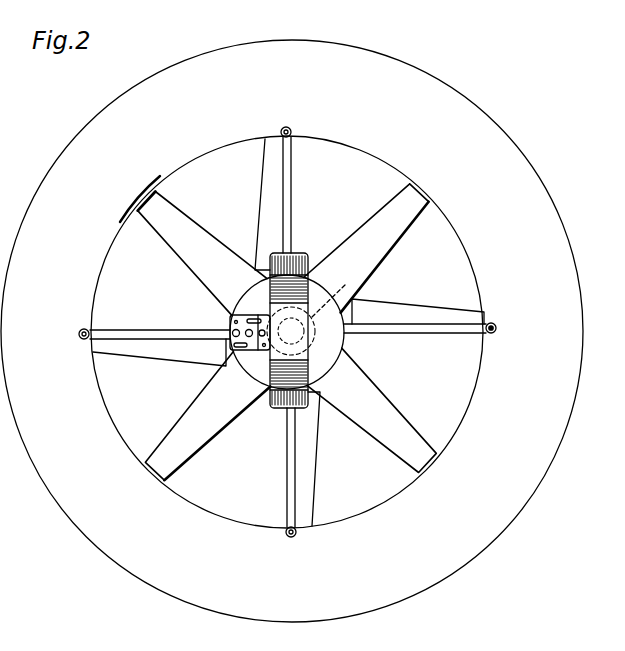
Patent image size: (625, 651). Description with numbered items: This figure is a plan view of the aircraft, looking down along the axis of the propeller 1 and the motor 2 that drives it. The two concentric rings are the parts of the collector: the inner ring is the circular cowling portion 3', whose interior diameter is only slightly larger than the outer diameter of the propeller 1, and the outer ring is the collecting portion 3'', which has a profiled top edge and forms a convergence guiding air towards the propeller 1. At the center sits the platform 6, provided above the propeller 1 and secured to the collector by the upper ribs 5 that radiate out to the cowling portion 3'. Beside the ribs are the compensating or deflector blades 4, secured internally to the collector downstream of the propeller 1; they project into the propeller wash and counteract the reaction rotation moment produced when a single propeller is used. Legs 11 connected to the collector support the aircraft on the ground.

The propeller 1 is at (162, 228).
The motor 2 is at (295, 280).
The cowling portion 3' is at (301, 332).
The collecting portion 3'' is at (292, 331).
The compensating blades 4 is at (262, 182).
The upper ribs 5 is at (292, 200).
The platform 6 is at (352, 297).
The legs 11 is at (295, 534).